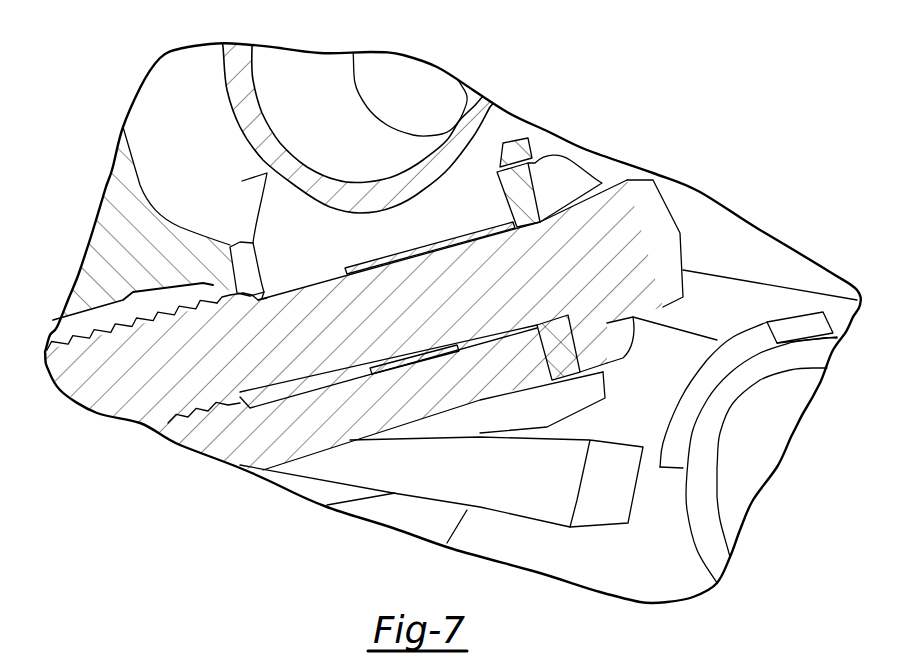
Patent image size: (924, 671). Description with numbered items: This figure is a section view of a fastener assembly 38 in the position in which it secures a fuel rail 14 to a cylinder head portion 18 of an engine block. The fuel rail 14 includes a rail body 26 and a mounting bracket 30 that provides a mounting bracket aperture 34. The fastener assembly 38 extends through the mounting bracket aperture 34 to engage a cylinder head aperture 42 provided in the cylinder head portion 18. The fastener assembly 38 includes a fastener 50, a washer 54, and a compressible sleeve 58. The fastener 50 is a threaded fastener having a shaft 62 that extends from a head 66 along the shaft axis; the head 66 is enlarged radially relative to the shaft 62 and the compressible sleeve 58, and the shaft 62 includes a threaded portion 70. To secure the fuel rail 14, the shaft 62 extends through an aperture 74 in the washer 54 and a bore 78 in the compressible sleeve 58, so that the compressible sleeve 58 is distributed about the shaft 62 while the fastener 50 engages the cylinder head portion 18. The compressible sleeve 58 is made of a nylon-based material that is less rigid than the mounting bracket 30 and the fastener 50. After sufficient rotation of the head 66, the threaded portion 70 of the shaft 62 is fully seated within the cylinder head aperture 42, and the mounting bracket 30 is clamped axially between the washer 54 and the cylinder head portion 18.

The fuel rail 14 is at (507, 128).
The cylinder head portion 18 is at (250, 447).
The rail body 26 is at (493, 122).
The mounting bracket 30 is at (283, 225).
The mounting bracket aperture 34 is at (433, 358).
The fastener assembly 38 is at (648, 174).
The cylinder head aperture 42 is at (213, 408).
The fastener 50 is at (317, 365).
The washer 54 is at (565, 368).
The compressible sleeve 58 is at (453, 348).
The shaft 62 is at (293, 377).
The head 66 is at (670, 250).
The threaded portion 70 is at (157, 307).
The aperture 74 is at (528, 163).
The bore 78 is at (517, 320).